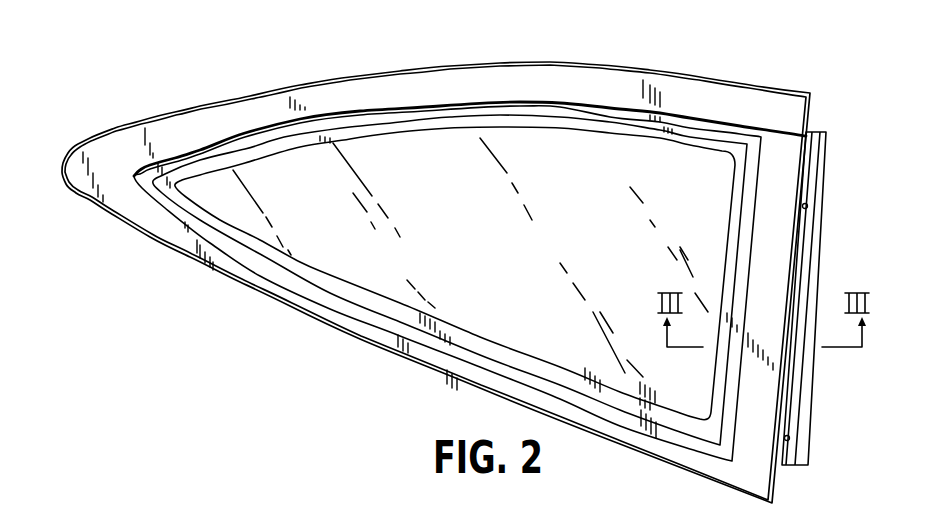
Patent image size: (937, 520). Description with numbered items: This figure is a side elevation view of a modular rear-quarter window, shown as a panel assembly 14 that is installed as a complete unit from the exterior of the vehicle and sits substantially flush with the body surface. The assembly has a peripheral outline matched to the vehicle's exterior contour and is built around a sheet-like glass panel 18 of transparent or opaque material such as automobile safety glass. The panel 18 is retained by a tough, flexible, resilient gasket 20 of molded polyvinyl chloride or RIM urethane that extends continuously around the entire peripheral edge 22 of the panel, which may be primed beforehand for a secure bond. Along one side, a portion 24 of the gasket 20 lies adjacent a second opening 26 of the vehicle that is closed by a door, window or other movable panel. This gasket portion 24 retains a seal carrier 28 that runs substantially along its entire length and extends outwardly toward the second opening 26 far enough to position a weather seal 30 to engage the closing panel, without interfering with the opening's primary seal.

The rear-quarter panel assembly 14 is at (284, 72).
The glass panel 18 is at (503, 228).
The gasket 20 is at (501, 76).
The peripheral edge 22 is at (618, 130).
The gasket portion 24 is at (748, 184).
The second opening 26 is at (870, 286).
The seal carrier 28 is at (810, 172).
The weather seal 30 is at (818, 238).